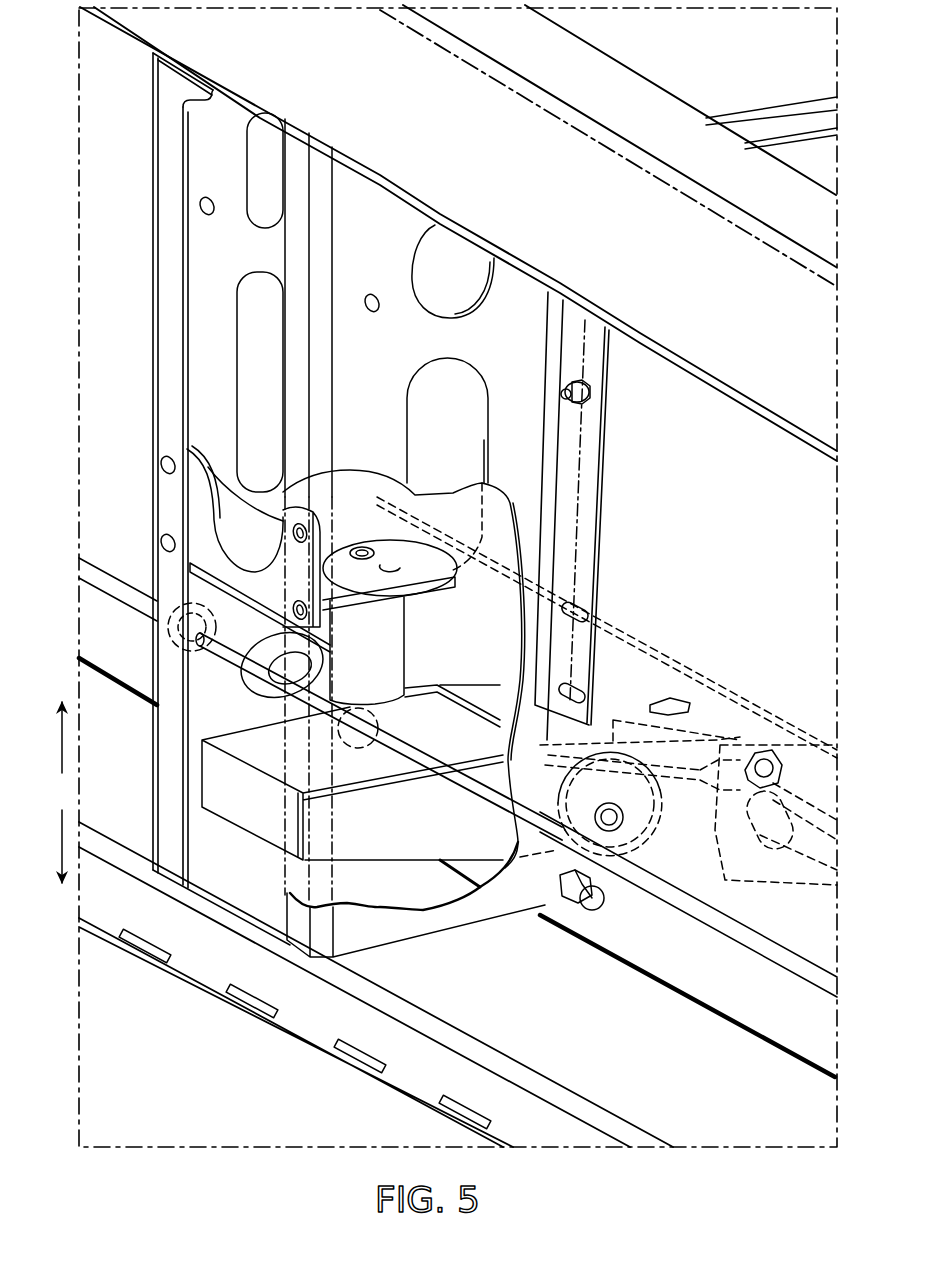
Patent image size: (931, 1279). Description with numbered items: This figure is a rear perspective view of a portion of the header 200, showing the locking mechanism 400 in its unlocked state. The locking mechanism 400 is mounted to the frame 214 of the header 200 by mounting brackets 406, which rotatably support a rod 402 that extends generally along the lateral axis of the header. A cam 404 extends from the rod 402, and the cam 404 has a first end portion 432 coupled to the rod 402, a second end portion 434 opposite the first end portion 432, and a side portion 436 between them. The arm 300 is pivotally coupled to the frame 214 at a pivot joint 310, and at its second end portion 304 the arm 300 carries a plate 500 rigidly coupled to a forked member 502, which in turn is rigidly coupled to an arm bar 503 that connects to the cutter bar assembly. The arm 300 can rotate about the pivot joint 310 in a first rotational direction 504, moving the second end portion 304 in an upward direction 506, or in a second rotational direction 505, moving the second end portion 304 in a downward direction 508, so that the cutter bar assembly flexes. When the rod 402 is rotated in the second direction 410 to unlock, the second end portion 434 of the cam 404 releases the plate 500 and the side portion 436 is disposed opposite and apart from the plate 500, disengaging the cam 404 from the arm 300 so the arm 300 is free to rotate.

The header 200 is at (715, 66).
The frame 214 is at (293, 1040).
The arm 300 is at (552, 915).
The second end portion 304 is at (228, 823).
The pivot joint 310 is at (618, 838).
The locking mechanism 400 is at (752, 967).
The rod 402 is at (750, 938).
The cam 404 is at (217, 670).
The mounting bracket 406 is at (178, 577).
The second direction 410 is at (693, 908).
The first end portion 432 is at (228, 688).
The second end portion 434 is at (348, 662).
The side portion 436 is at (277, 715).
The plate 500 is at (353, 760).
The forked member 502 is at (398, 867).
The arm bar 503 is at (690, 695).
The first rotational direction 504 is at (687, 847).
The second rotational direction 505 is at (572, 778).
The upward direction 506 is at (62, 747).
The downward direction 508 is at (62, 845).